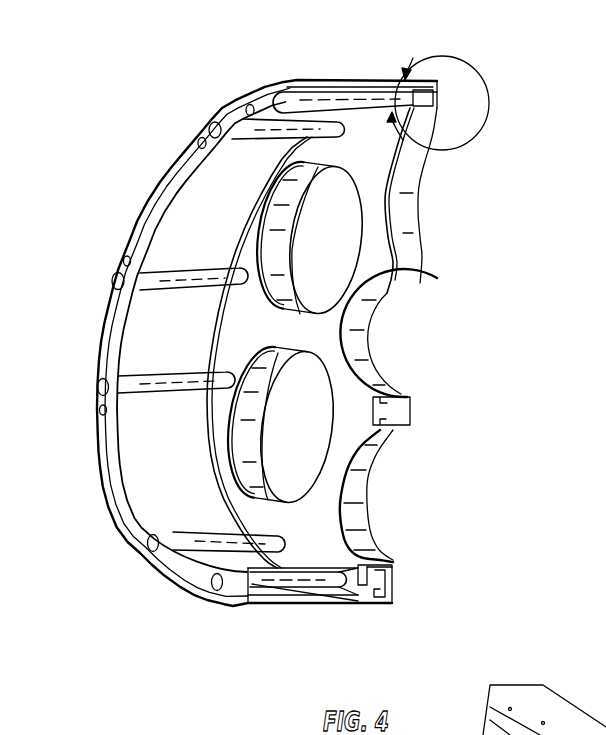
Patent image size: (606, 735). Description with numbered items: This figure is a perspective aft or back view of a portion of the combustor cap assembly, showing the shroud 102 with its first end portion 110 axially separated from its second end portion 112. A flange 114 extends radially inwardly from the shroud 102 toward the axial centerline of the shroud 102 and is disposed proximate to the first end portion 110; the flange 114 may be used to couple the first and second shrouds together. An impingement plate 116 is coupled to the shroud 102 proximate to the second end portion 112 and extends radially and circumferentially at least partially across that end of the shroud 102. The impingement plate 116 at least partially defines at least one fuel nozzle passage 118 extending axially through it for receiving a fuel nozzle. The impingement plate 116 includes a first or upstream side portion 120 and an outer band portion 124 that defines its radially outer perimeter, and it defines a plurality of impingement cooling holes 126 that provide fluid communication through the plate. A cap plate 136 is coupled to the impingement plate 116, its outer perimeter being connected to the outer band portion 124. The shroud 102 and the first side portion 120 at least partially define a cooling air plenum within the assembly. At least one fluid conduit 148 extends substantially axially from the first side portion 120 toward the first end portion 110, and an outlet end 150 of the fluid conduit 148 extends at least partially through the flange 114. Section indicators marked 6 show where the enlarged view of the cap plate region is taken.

The section line 6- 6 is at (381, 93).
The shroud 102 is at (297, 615).
The first end portion 110 is at (225, 617).
The second end portion 112 is at (352, 610).
The flange 114 is at (148, 518).
The impingement plate 116 is at (398, 405).
The fuel nozzle passage 118 is at (324, 403).
The first side portion 120 is at (320, 525).
The outer band portion 124 is at (393, 607).
The impingement cooling holes 126 is at (370, 287).
The cap plate 136 is at (460, 123).
The fluid conduit 148 is at (165, 262).
The outlet end 150 is at (110, 282).